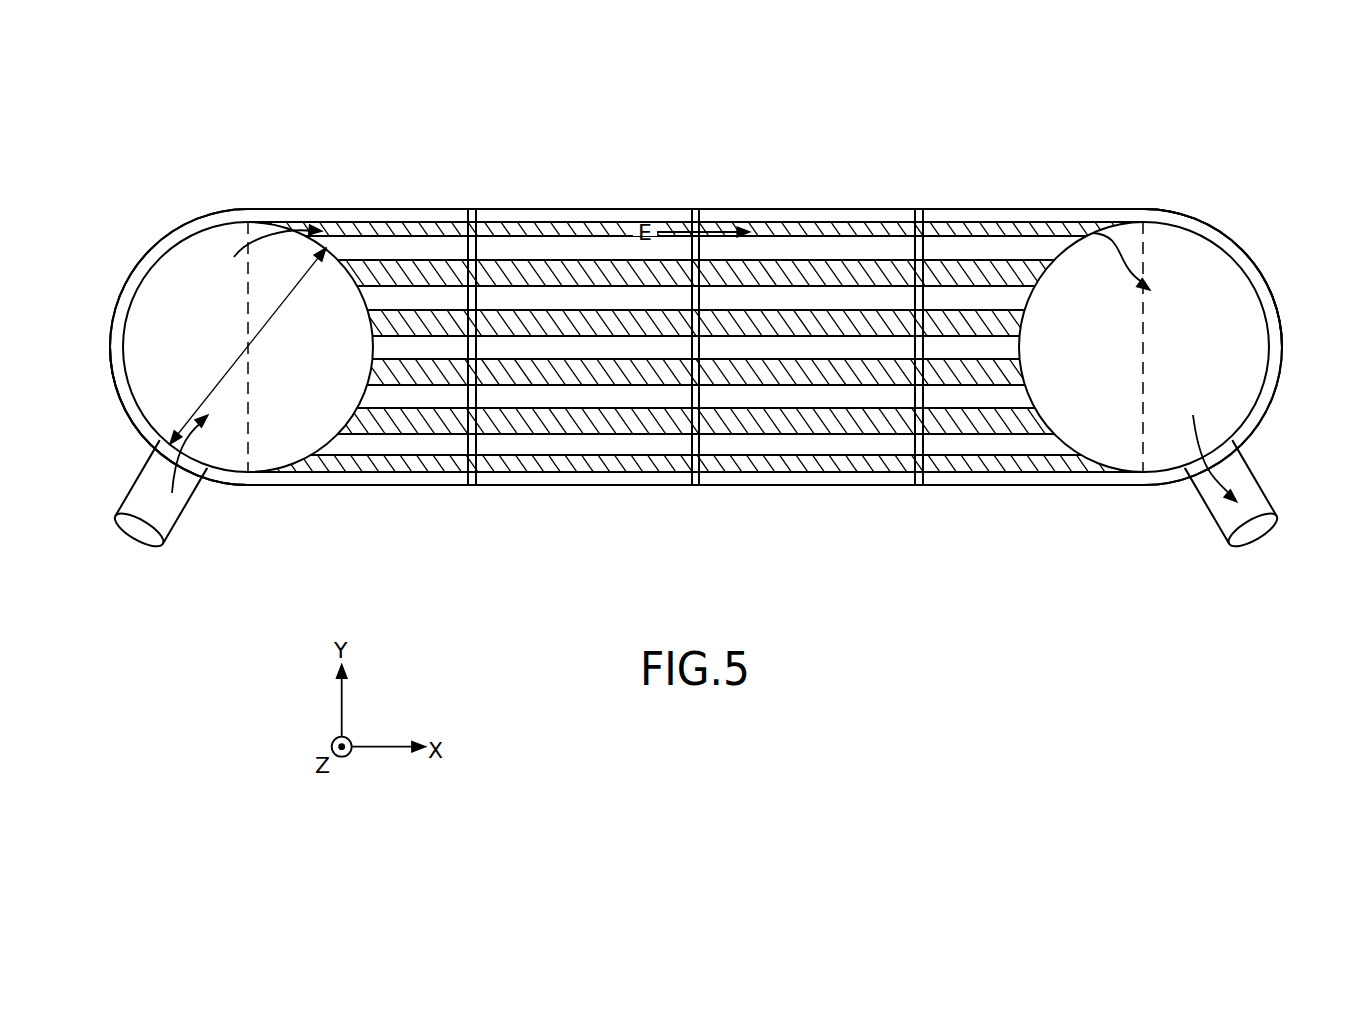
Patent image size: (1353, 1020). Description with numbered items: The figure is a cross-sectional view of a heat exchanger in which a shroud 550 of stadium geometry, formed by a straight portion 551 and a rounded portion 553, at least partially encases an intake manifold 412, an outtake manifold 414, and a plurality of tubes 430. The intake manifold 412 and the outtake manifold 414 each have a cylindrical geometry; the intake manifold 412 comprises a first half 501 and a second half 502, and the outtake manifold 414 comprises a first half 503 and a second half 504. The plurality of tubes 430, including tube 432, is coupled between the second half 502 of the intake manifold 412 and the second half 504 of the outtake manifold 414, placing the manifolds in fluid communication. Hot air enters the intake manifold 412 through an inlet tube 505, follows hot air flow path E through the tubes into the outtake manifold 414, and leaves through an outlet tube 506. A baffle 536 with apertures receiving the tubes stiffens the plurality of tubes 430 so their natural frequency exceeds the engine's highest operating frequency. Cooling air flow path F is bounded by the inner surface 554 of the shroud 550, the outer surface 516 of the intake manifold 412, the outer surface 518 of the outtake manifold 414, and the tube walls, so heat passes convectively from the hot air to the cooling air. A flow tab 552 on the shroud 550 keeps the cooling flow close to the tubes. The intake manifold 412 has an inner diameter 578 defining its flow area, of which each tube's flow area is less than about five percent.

The intake manifold 412 is at (158, 250).
The outtake manifold 414 is at (1255, 284).
The plurality of tubes 430 is at (976, 188).
The tube 432 is at (872, 220).
The first half 501 is at (208, 360).
The second half 502 is at (330, 360).
The first half 503 is at (1220, 361).
The second half 504 is at (1102, 361).
The inlet tube 505 is at (182, 513).
The outlet pipe 506 is at (1228, 522).
The outer surface 516 is at (333, 445).
The outer surface 518 is at (1030, 395).
The baffle 536 is at (478, 215).
The shroud 550 is at (337, 208).
The straight portion 551 is at (652, 193).
The flow tab 552 is at (118, 420).
The rounded portion 553 is at (1258, 240).
The inner surface 554 is at (1035, 214).
The inner diameter 578 is at (295, 290).